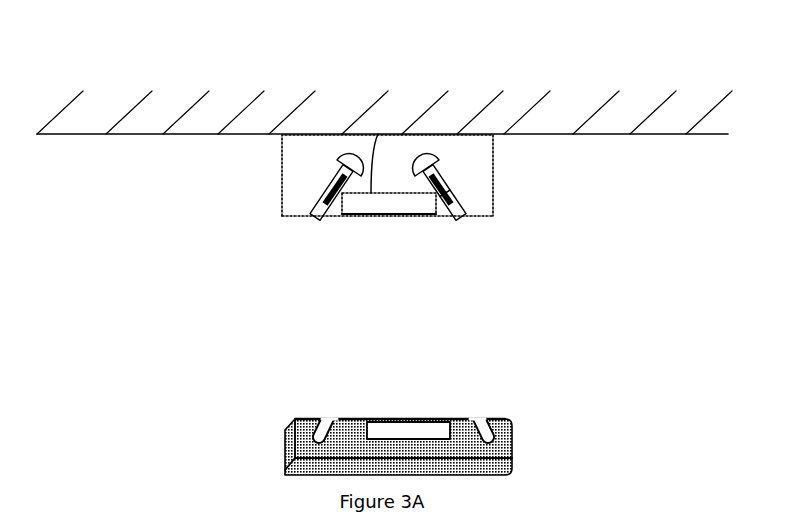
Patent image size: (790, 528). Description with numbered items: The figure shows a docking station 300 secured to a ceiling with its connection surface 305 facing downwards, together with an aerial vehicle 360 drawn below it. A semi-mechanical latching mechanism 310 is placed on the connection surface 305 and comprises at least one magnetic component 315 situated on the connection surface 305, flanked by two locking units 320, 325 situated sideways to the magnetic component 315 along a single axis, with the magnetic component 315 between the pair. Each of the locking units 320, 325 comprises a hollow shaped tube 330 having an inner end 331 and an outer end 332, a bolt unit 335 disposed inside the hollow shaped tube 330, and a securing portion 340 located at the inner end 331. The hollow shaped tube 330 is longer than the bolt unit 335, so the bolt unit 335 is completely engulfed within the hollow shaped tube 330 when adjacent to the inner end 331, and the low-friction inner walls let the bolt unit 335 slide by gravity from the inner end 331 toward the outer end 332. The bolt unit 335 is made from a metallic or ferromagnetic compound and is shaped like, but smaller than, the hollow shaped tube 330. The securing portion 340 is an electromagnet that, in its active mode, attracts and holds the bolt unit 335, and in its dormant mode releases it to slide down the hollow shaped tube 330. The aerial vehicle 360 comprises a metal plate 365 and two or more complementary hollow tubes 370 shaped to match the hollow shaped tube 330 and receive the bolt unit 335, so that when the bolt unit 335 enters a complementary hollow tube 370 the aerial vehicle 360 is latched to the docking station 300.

The docking station 300 is at (218, 182).
The connection surface 305 is at (288, 217).
The semi-mechanical latching mechanism 310 is at (396, 245).
The magnetic component 315 is at (378, 134).
The locking unit 320 is at (467, 233).
The locking unit 325 is at (325, 232).
The hollow shaped tube 330 is at (470, 205).
The inner end 331 is at (337, 161).
The outer end 332 is at (313, 220).
The bolt unit 335 is at (452, 186).
The securing portion 340 is at (424, 155).
The aerial vehicle 360 is at (210, 414).
The metal plate 365 is at (418, 424).
The complementary hollow tubes 370 is at (478, 420).